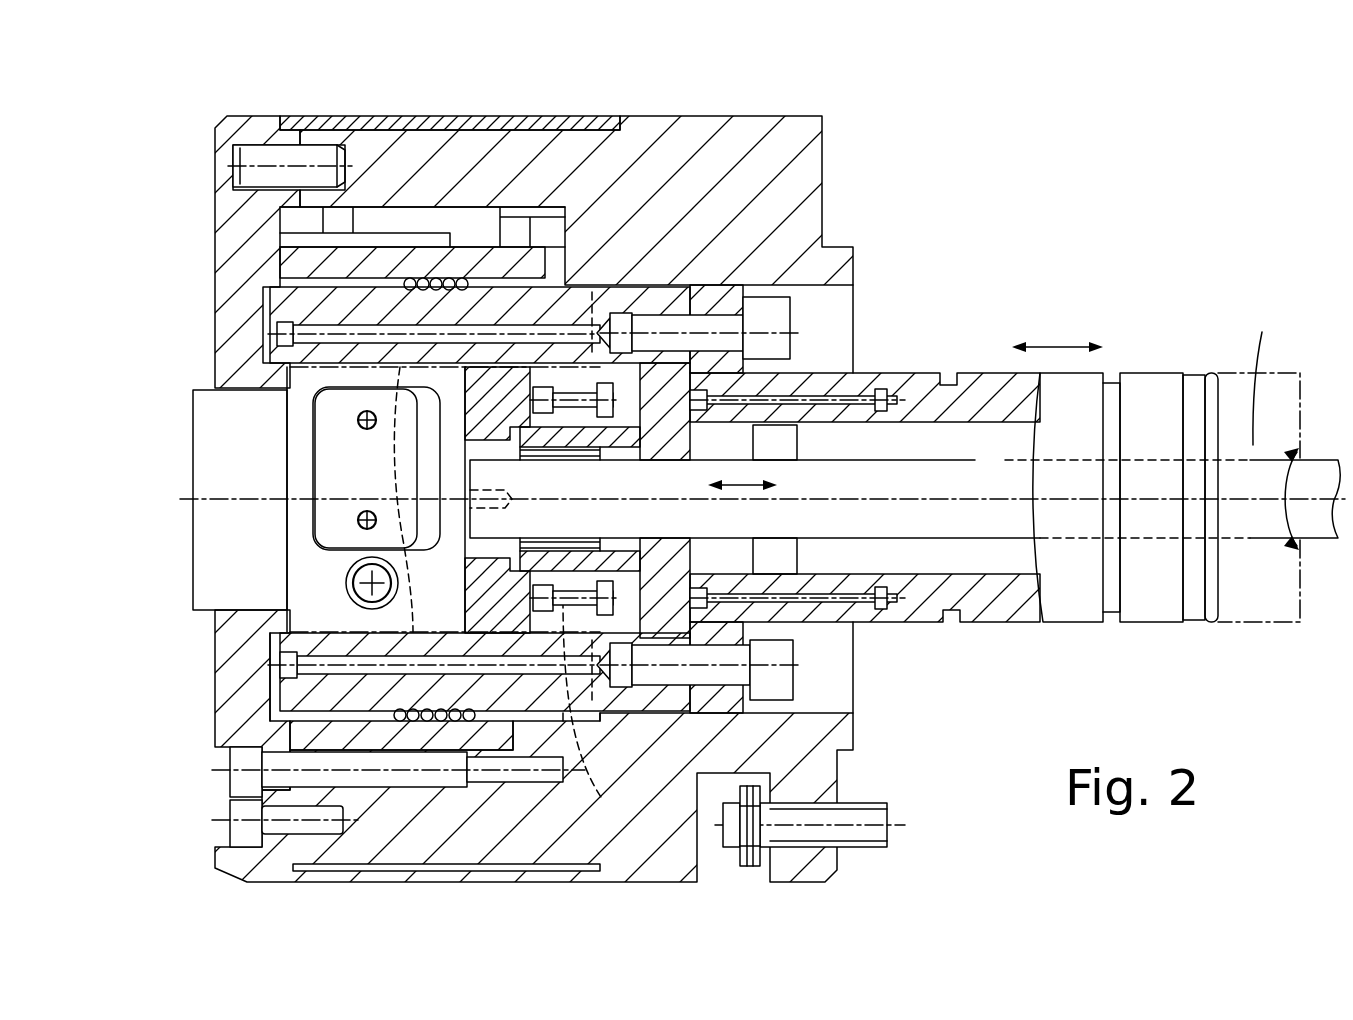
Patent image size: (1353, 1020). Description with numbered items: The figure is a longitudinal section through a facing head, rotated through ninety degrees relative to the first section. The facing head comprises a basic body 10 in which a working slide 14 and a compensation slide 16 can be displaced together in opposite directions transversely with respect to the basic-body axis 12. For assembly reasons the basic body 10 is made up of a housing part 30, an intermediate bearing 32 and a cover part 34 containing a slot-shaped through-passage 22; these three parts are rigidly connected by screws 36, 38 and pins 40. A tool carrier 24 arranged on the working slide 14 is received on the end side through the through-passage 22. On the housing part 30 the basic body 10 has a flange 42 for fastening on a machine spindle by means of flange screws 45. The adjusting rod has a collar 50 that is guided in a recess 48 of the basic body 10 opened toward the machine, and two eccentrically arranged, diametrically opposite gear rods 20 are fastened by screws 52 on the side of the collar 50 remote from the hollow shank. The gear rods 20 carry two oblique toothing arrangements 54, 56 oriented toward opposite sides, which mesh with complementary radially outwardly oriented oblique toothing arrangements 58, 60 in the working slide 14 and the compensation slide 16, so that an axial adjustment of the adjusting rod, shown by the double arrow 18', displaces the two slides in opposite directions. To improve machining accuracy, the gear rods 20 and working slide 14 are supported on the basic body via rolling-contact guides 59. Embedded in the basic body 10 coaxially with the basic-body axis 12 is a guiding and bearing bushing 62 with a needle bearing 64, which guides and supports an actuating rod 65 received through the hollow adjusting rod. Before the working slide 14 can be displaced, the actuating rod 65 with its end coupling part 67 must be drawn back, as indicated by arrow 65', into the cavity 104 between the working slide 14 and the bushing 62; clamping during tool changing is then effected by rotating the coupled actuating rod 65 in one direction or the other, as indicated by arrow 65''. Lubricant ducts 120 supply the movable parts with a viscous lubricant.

The basic body 10 is at (806, 164).
The basic-body axis 12 is at (918, 497).
The working slide 14 is at (300, 425).
The compensation slide 16 is at (528, 366).
The double arrow 18' is at (1064, 319).
The gear rods 20 is at (300, 305).
The through-passage 22 is at (243, 615).
The tool carrier 24 is at (208, 518).
The housing part 30 is at (822, 773).
The intermediate bearing 32 is at (313, 733).
The cover part 34 is at (240, 237).
The screws 36 is at (240, 813).
The screws 38 is at (240, 762).
The pins 40 is at (261, 150).
The flange 42 is at (845, 858).
The flange screws 45 is at (888, 815).
The recess 48 is at (823, 713).
The collar 50 is at (812, 700).
The screws 52 is at (778, 310).
The oblique toothing arrangement 54 is at (398, 468).
The oblique toothing arrangement 58 is at (366, 499).
The oblique toothing arrangement 56 is at (598, 788).
The oblique toothing arrangement 60 is at (581, 717).
The rolling-contact guide 59 is at (423, 278).
The guiding and bearing bushing 62 is at (640, 551).
The needle bearing 64 is at (582, 476).
The actuating rod 65 is at (1166, 537).
The arrow 65' is at (803, 458).
The arrow 65'' is at (1263, 374).
The coupling part 67 is at (480, 490).
The cavity 104 is at (505, 540).
The lubricant ducts 120 is at (828, 590).